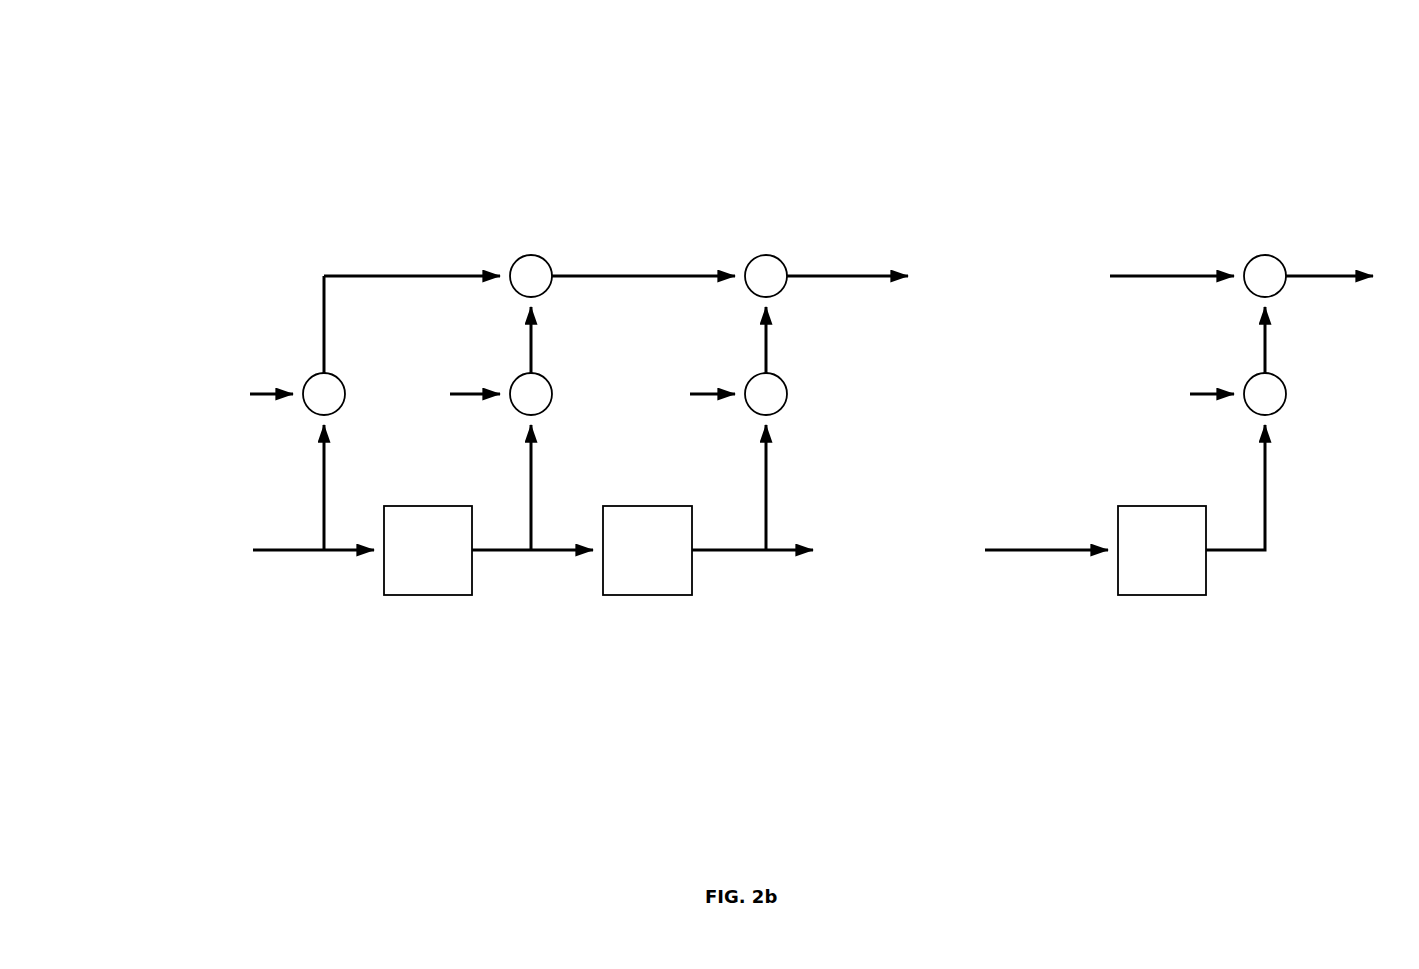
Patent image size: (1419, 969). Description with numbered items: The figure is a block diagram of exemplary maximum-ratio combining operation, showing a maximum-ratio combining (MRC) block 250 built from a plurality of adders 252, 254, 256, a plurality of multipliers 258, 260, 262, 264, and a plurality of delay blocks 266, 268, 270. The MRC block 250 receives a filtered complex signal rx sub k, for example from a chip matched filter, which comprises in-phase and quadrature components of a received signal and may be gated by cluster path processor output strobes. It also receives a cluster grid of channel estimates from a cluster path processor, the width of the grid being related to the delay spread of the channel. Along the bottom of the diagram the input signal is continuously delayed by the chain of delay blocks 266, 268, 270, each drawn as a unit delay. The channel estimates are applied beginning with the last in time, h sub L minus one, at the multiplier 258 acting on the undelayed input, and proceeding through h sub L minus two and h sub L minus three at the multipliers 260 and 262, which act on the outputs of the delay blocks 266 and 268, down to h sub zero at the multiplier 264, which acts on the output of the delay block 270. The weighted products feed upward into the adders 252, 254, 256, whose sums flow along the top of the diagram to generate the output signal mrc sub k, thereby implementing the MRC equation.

The maximum-ratio combining (MRC) block 250 is at (318, 114).
The adder 252 is at (516, 289).
The adder 254 is at (750, 289).
The adder 256 is at (1252, 289).
The multiplier 258 is at (313, 412).
The multiplier 260 is at (518, 412).
The multiplier 262 is at (755, 412).
The multiplier 264 is at (1252, 412).
The delay block 266 is at (412, 598).
The delay block 268 is at (622, 598).
The delay block 270 is at (1138, 600).